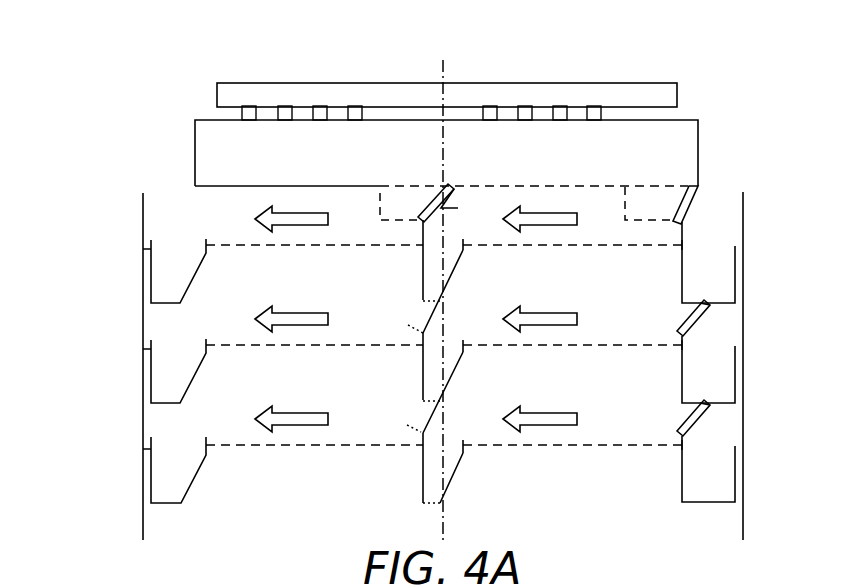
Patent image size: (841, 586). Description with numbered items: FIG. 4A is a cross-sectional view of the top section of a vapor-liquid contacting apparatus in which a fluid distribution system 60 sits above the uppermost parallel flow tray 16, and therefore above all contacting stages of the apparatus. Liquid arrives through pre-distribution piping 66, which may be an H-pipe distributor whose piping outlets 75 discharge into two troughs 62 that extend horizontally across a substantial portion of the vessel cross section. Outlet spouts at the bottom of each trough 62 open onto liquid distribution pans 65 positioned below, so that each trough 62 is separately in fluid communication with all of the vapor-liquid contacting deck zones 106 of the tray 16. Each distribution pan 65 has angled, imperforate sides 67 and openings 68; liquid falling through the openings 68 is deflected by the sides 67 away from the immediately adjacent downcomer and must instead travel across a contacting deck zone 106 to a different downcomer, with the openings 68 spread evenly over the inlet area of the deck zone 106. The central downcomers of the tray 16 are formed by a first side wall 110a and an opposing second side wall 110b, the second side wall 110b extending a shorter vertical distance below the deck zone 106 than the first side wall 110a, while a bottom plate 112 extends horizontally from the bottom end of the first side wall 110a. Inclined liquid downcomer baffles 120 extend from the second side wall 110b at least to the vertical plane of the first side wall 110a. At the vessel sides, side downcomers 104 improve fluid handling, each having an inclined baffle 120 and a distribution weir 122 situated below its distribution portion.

The fluid distribution system 60 is at (419, 60).
The parallel flow tray 16 is at (102, 242).
The pre-distribution piping 66 is at (648, 90).
The piping outlets 75 is at (326, 106).
The trough 62 is at (692, 156).
The liquid distribution pan 65 is at (378, 198).
The angled imperforate side 67 is at (438, 208).
The distribution pan opening 68 is at (648, 222).
The side downcomer 104 is at (735, 277).
The vapor-liquid contacting deck zone 106 is at (262, 247).
The first side wall 110a is at (423, 268).
The second side wall 110b is at (464, 249).
The bottom plate 112 is at (424, 306).
The inclined liquid downcomer baffle 120 is at (443, 288).
The distribution weir 122 is at (668, 325).